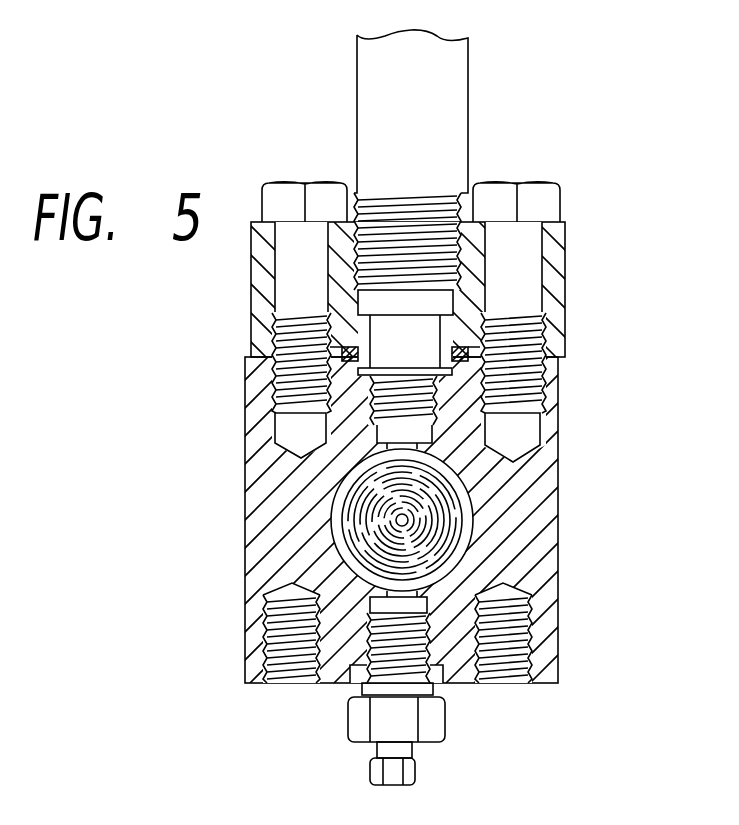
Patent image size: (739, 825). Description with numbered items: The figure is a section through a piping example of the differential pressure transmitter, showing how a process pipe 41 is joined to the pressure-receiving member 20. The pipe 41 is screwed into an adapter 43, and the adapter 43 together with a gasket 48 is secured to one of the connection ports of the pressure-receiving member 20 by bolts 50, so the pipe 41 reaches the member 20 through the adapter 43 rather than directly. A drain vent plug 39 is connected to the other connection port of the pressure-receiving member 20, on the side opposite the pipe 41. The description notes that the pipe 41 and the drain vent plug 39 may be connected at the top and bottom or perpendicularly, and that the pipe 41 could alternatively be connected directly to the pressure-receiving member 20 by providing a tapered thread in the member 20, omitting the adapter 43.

The pressure-receiving member 20 is at (559, 477).
The drain vent plug 39 is at (416, 770).
The pipe 41 is at (469, 135).
The adapter 43 is at (566, 283).
The gasket 48 is at (470, 352).
The bolt 50 is at (281, 183).